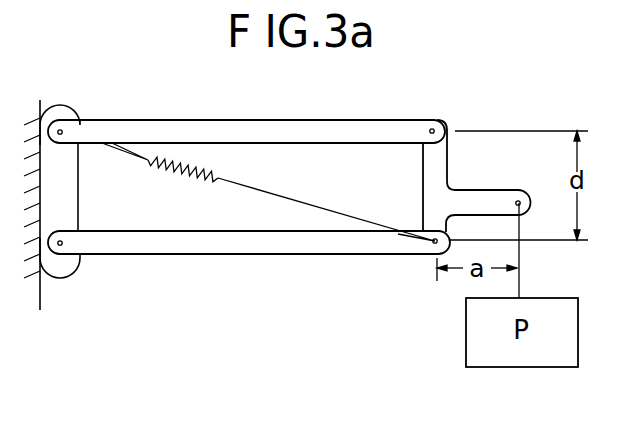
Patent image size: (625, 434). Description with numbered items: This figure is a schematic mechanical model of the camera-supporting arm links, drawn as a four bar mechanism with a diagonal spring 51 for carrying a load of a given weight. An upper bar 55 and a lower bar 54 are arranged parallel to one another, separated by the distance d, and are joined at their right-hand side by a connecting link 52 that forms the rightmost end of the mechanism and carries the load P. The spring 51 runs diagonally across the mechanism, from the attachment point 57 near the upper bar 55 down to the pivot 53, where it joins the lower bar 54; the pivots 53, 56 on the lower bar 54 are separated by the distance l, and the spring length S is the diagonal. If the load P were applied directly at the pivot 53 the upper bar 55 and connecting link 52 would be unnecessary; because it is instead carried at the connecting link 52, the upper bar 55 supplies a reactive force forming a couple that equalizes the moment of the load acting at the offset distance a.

The diagonal spring 51 is at (217, 178).
The connecting link 52 is at (462, 192).
The pivot 53 is at (433, 243).
The lower bar 54 is at (187, 249).
The upper bar 55 is at (273, 124).
The pivot 56 is at (62, 244).
The attachment point 57 is at (62, 130).